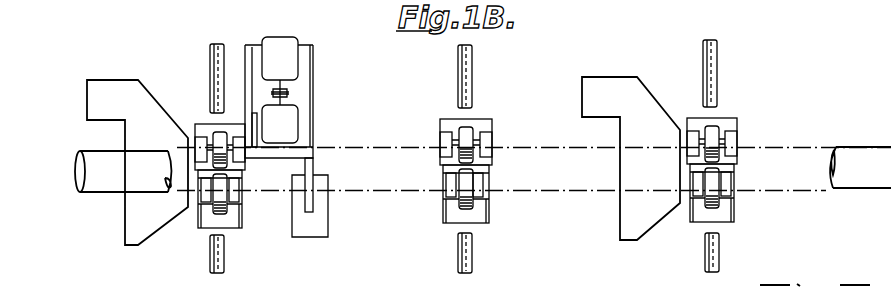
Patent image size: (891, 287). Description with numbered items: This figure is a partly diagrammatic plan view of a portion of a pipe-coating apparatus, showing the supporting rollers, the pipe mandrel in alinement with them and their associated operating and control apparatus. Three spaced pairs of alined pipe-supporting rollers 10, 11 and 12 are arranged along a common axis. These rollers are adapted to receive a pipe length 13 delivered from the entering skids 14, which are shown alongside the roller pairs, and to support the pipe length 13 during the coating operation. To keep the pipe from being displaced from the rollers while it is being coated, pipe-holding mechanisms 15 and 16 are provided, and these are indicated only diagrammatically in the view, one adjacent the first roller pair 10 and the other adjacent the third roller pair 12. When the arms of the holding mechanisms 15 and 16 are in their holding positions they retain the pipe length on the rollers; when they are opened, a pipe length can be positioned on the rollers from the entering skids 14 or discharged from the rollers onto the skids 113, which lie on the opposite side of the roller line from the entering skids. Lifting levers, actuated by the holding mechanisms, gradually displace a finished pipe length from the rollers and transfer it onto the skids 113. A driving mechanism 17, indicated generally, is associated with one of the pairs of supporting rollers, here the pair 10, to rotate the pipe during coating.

The pipe-supporting rollers 10 is at (237, 197).
The pipe-supporting rollers 11 is at (487, 197).
The pipe-supporting rollers 12 is at (732, 197).
The pipe length 13 is at (360, 148).
The entering skids 14 is at (210, 52).
The pipe-holding mechanism 15 is at (150, 123).
The pipe-holding mechanism 16 is at (653, 123).
The driving mechanism 17 is at (303, 98).
The skids 113 is at (226, 258).